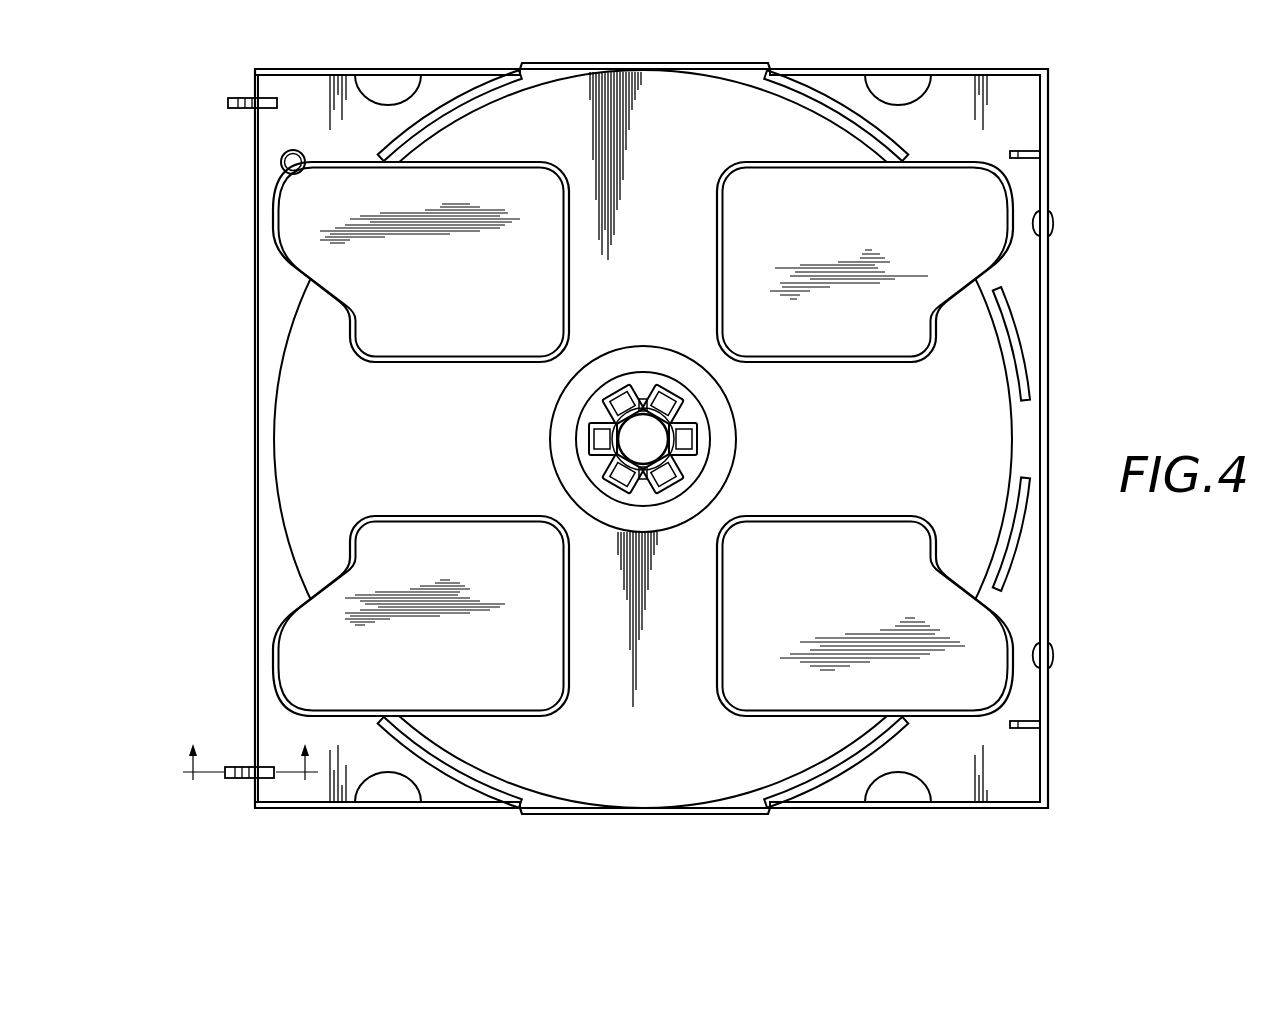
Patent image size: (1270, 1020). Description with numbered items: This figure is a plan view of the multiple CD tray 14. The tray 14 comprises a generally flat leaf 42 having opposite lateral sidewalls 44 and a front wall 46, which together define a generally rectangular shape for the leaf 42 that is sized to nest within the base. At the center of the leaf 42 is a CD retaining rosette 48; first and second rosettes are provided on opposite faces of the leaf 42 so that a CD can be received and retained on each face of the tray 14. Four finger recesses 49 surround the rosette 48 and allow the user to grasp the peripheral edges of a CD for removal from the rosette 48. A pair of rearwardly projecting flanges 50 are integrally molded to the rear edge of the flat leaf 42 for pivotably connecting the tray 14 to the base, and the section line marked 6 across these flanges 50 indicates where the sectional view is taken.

The multiple CD tray 14 is at (948, 823).
The flat leaf 42 is at (348, 776).
The lateral sidewalls 44 is at (462, 74).
The front wall 46 is at (1047, 343).
The CD retaining rosette 48 is at (648, 488).
The finger recesses 49 is at (443, 540).
The rearwardly projecting flanges 50 is at (228, 103).
The section line 6- 6 is at (250, 748).